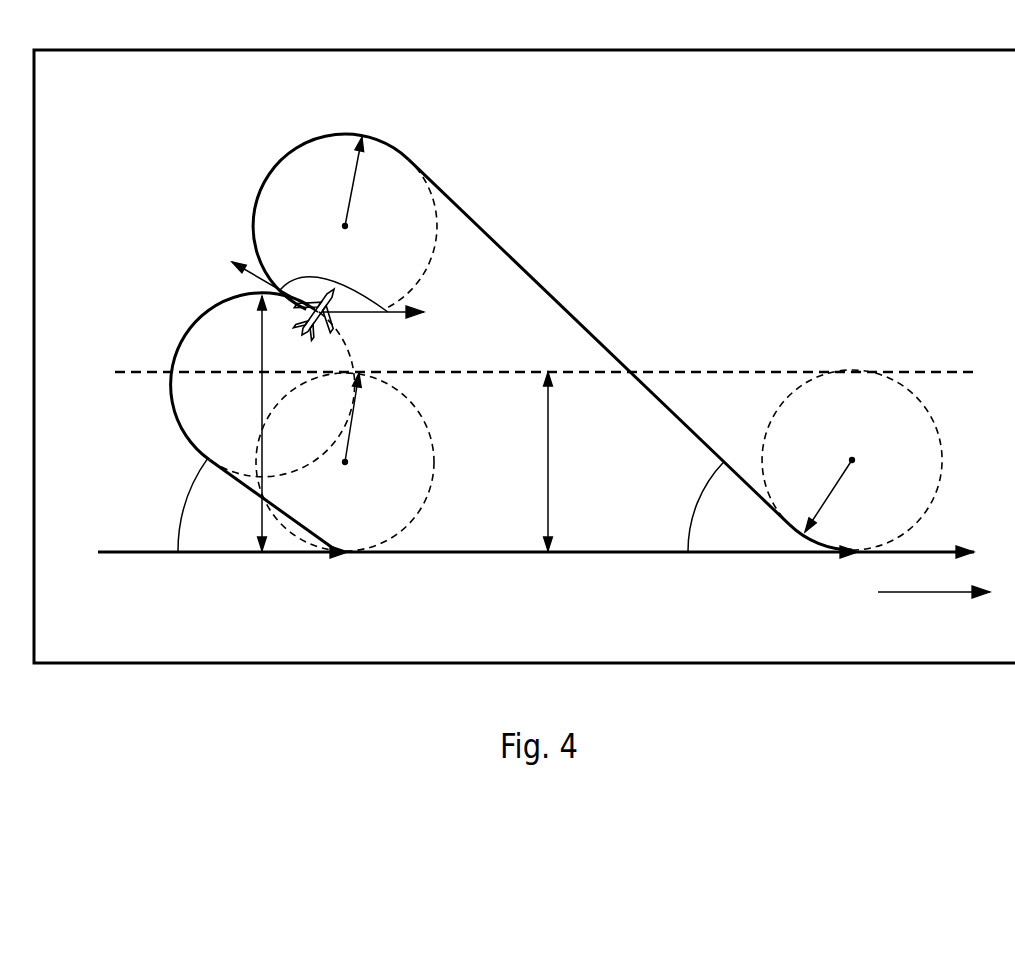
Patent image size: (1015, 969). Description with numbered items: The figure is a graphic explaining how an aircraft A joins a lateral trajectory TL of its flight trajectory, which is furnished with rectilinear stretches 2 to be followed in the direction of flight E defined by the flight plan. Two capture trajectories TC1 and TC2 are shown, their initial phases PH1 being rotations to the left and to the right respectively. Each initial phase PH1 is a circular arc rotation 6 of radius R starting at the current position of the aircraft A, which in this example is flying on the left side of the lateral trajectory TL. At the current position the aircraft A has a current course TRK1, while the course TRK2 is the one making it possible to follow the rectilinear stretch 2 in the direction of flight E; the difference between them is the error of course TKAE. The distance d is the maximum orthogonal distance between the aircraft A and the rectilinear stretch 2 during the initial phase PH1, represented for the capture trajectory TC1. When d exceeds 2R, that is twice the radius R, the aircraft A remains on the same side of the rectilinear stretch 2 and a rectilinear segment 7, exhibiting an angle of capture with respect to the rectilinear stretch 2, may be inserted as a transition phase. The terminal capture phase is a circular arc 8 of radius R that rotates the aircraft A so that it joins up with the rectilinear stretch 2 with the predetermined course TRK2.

The rectilinear stretch 2 is at (506, 583).
The circular arc rotation 6 is at (264, 272).
The rectilinear segment 7 is at (246, 486).
The circular arc 8 is at (313, 560).
The lateral trajectory TL is at (140, 541).
The capture trajectory TC1 is at (152, 350).
The capture trajectory TC2 is at (237, 186).
The initial phase PH1 is at (281, 148).
The current course TRK1 is at (258, 278).
The course TRK2 is at (398, 312).
The error of course TKAE is at (334, 279).
The aircraft A is at (347, 327).
The radius R is at (351, 197).
The twice the radius 2R is at (547, 466).
The distance d is at (262, 402).
The direction of flight E is at (913, 592).